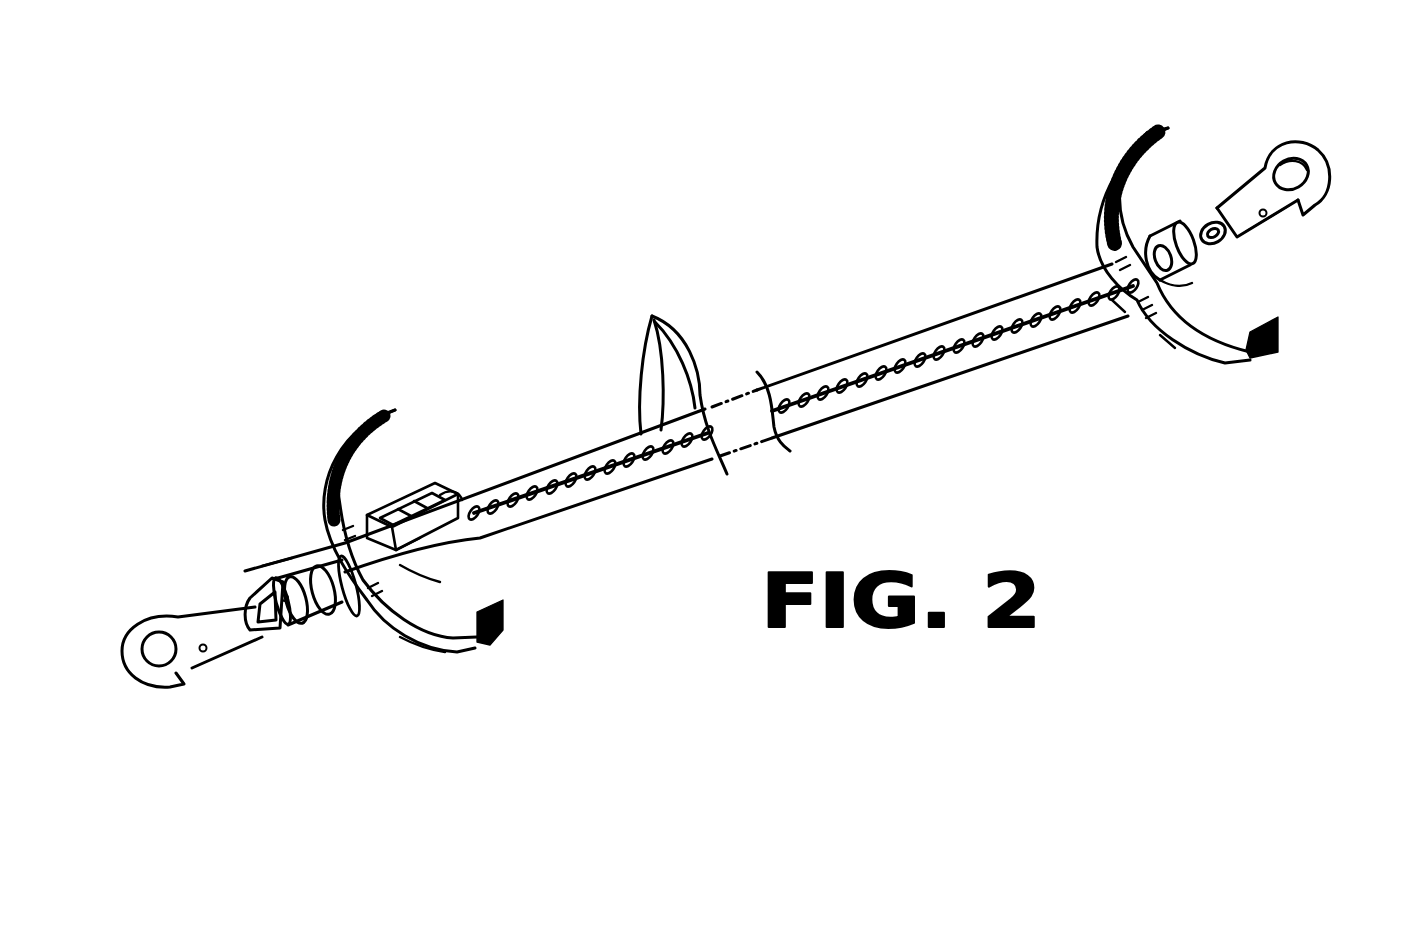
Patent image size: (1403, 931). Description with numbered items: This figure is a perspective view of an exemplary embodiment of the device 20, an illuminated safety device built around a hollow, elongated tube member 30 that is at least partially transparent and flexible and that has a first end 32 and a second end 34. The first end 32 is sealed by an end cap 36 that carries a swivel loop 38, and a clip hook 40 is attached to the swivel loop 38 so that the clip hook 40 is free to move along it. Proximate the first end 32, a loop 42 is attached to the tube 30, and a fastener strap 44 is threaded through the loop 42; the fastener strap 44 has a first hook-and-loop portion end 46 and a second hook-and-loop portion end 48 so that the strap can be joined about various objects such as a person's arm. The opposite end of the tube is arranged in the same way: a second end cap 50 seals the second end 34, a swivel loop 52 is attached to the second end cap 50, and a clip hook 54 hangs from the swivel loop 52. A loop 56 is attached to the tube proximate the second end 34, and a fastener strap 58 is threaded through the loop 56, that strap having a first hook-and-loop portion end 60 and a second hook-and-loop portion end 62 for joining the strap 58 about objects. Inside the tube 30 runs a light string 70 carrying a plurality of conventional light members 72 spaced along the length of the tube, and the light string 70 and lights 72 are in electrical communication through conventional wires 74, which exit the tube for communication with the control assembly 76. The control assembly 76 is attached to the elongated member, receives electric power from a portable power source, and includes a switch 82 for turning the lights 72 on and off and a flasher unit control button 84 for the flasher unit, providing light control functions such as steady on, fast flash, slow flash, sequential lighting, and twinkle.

The device 20 is at (727, 128).
The hollow, elongated tube member 30 is at (860, 357).
The first end 32 is at (335, 605).
The second end 34 is at (1190, 282).
The end cap 36 is at (290, 575).
The swivel loop 38 is at (262, 593).
The clip hook 40 is at (157, 615).
The loop 42 is at (405, 565).
The fastener strap 44 is at (408, 645).
The first hook-and-loop portion end 46 is at (365, 420).
The second hook-and-loop portion end 48 is at (505, 612).
The second end cap 50 is at (1167, 232).
The swivel loop 52 is at (1215, 205).
The clip hook 54 is at (1320, 158).
The loop 56 is at (1120, 317).
The fastener strap 58 is at (1163, 337).
The first hook-and-loop portion end 60 is at (1147, 135).
The second hook-and-loop portion end 62 is at (1280, 337).
The light string 70 is at (589, 472).
The light members 72 is at (678, 372).
The wires 74 is at (362, 588).
The control assembly 76 is at (462, 495).
The switch 82 is at (413, 493).
The flasher unit control button 84 is at (450, 490).